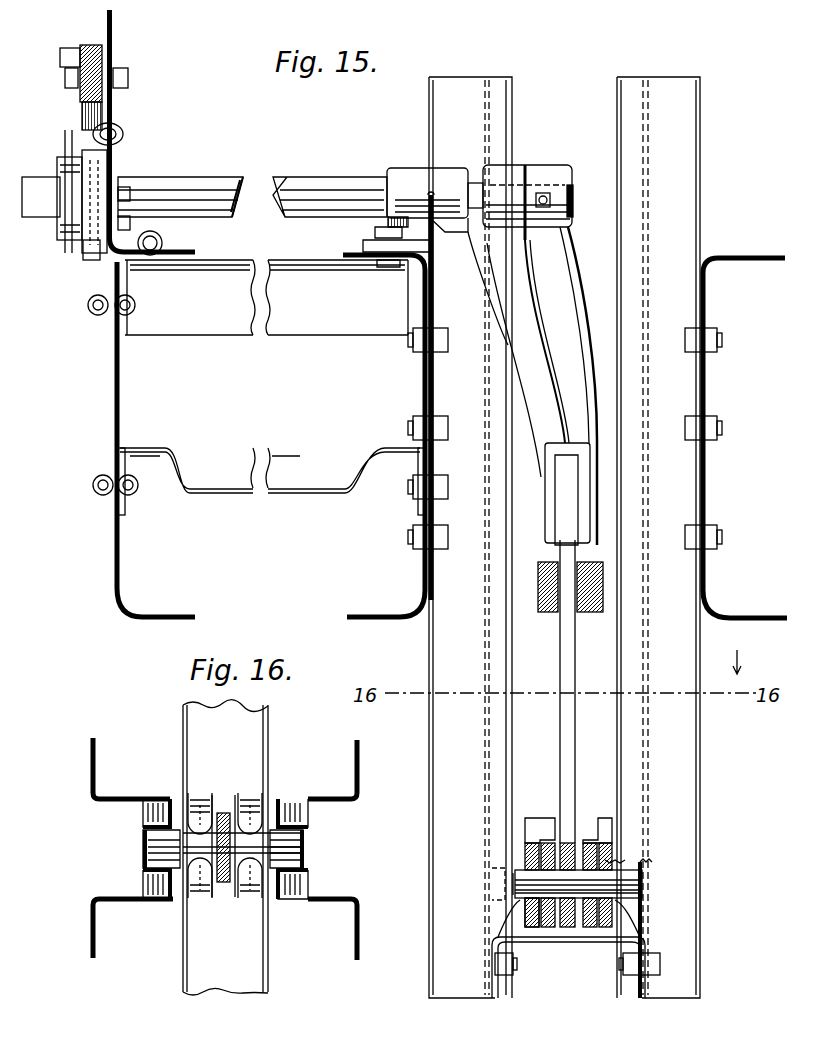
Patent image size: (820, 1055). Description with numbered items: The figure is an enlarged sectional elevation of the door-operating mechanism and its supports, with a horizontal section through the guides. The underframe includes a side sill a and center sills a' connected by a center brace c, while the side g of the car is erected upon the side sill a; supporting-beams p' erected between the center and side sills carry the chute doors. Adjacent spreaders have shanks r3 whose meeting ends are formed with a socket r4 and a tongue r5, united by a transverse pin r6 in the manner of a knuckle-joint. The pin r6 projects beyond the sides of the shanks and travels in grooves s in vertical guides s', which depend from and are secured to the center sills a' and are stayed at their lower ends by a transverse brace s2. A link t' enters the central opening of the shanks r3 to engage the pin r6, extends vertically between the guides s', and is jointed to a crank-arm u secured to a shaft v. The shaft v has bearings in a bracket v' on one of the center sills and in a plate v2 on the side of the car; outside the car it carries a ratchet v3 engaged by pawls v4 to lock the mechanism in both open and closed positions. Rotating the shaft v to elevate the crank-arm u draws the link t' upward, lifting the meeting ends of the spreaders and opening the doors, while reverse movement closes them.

In FIG. 15, the side g is at (112, 18).
In FIG. 15, the side sill a is at (141, 424).
In FIG. 15, the center sill a' is at (565, 405).
In FIG. 15, the center brace c is at (228, 493).
In FIG. 15, the supporting-beam p' is at (266, 317).
In FIG. 15, the shaft v is at (204, 188).
In FIG. 15, the bracket v' is at (423, 203).
In FIG. 15, the plate v2 is at (120, 170).
In FIG. 15, the ratchet v3 is at (82, 254).
In FIG. 15, the pawl v4 is at (88, 160).
In FIG. 15, the crank-arm u is at (535, 388).
In FIG. 15, the vertical guide s' is at (565, 537).
In FIG. 16, the vertical guide s' is at (373, 908).
In FIG. 15, the link t' is at (551, 733).
In FIG. 16, the link t' is at (241, 829).
In FIG. 15, the shank-piece r3 is at (595, 808).
In FIG. 16, the shank-piece r3 is at (225, 847).
In FIG. 15, the transverse pin r6 is at (634, 875).
In FIG. 16, the transverse pin r6 is at (146, 832).
In FIG. 15, the transverse brace s2 is at (561, 940).
In FIG. 15, the tongue r5 is at (585, 925).
In FIG. 15, the socket r4 is at (532, 927).
In FIG. 16, the groove s is at (224, 849).